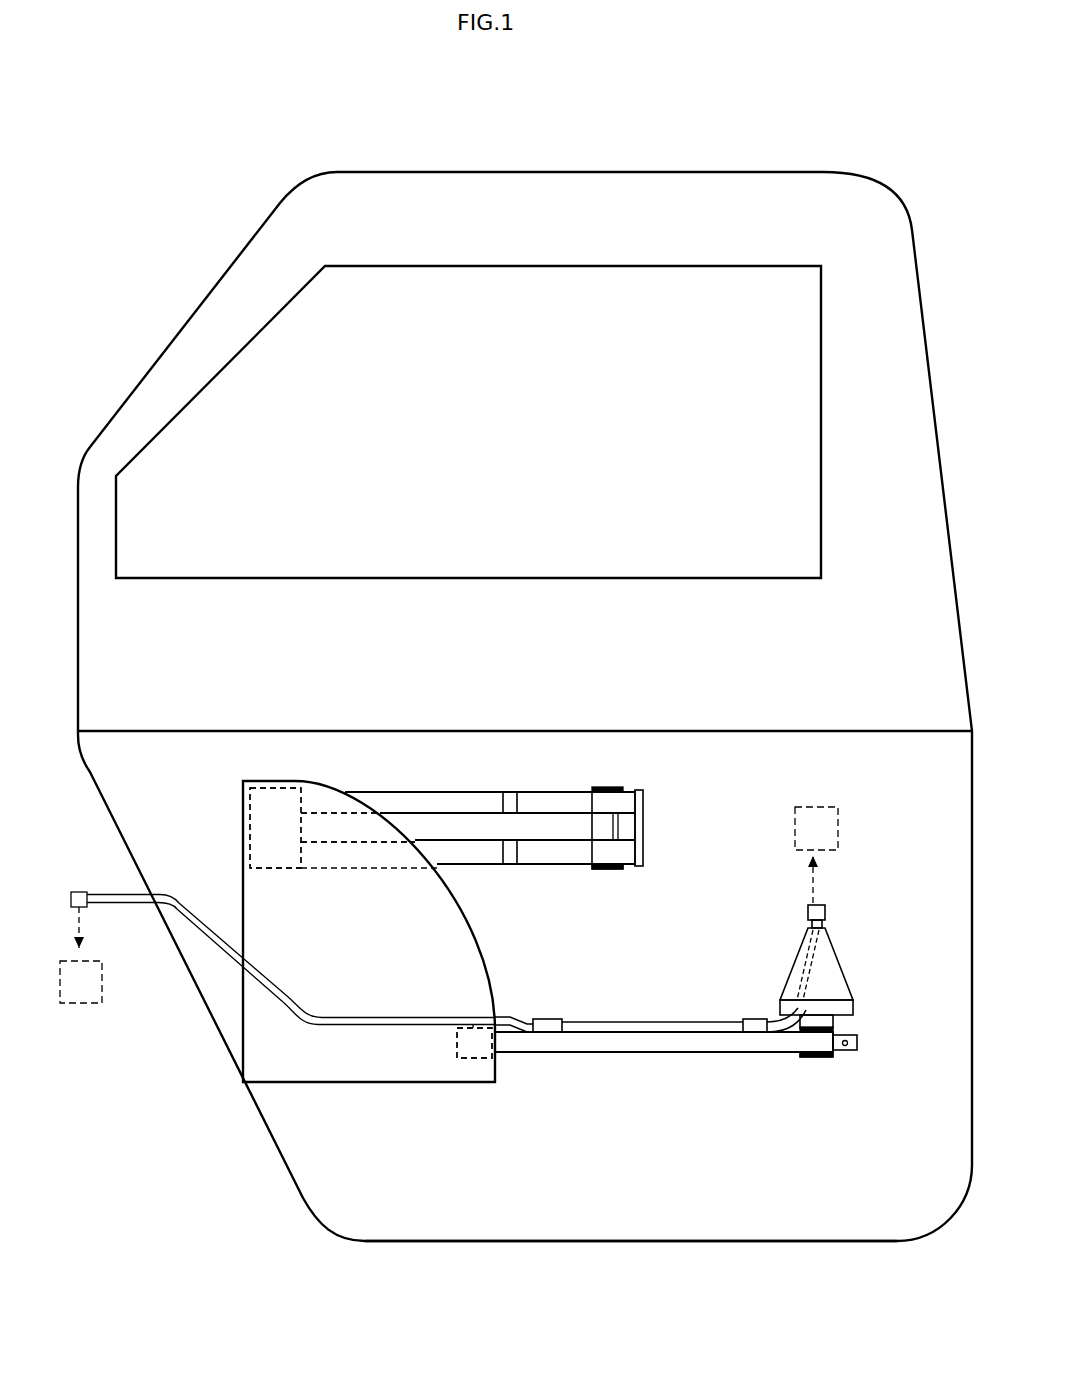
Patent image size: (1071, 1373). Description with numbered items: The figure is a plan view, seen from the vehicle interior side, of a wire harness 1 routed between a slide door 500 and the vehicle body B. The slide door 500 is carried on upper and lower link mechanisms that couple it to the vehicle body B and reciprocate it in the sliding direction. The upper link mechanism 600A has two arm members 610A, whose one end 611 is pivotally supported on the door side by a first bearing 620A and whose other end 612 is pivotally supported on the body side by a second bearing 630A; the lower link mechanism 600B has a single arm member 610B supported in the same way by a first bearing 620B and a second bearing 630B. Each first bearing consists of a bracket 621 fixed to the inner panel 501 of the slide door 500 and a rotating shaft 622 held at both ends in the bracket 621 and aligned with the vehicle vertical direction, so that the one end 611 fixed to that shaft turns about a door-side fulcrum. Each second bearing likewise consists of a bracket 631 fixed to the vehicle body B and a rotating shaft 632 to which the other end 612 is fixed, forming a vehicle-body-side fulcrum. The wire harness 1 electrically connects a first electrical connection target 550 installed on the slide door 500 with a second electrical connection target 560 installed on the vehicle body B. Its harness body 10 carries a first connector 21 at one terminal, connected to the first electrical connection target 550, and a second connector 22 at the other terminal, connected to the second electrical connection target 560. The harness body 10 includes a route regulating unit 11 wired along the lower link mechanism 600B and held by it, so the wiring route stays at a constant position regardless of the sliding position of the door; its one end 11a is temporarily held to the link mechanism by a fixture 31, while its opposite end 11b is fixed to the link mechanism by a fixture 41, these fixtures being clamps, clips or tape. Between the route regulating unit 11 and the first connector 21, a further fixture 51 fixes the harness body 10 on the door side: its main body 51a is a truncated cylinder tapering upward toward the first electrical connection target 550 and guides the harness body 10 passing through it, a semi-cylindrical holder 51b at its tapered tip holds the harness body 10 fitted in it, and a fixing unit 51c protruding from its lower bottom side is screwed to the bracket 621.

The wire harness 1 is at (224, 975).
The harness body 10 is at (650, 983).
The route regulating unit 11 is at (647, 1021).
The one end of route regulating unit 11a is at (742, 1019).
The second end portion of cable 11b is at (565, 1019).
The first connector 21 is at (830, 910).
The second connector 22 is at (79, 891).
The fixture 31 is at (765, 1019).
The fixture 41 is at (550, 1020).
The fixture 51 is at (839, 935).
The main body 51a is at (846, 975).
The holder 51b is at (826, 930).
The fixing unit 51c is at (855, 1018).
The slide door 500 is at (333, 124).
The inner panel 501 is at (398, 1214).
The first electrical connection target 550 is at (815, 805).
The second electrical connection target 560 is at (82, 1005).
The upper link mechanism 600A is at (597, 892).
The lower link mechanism 600B is at (733, 1123).
The arm member 610A is at (438, 842).
The arm member 610B is at (690, 1046).
The one end of arm member 611 is at (600, 800).
The other end of arm member 612 is at (305, 842).
The first bearing 620A is at (656, 800).
The first bearing 620B is at (869, 1045).
The bracket 621 is at (645, 850).
The rotating shaft 622 is at (618, 870).
The second bearing 630A is at (236, 799).
The second bearing 630B is at (445, 1048).
The bracket 631 is at (250, 852).
The rotating shaft 632 is at (275, 868).
The vehicle body B is at (287, 1082).